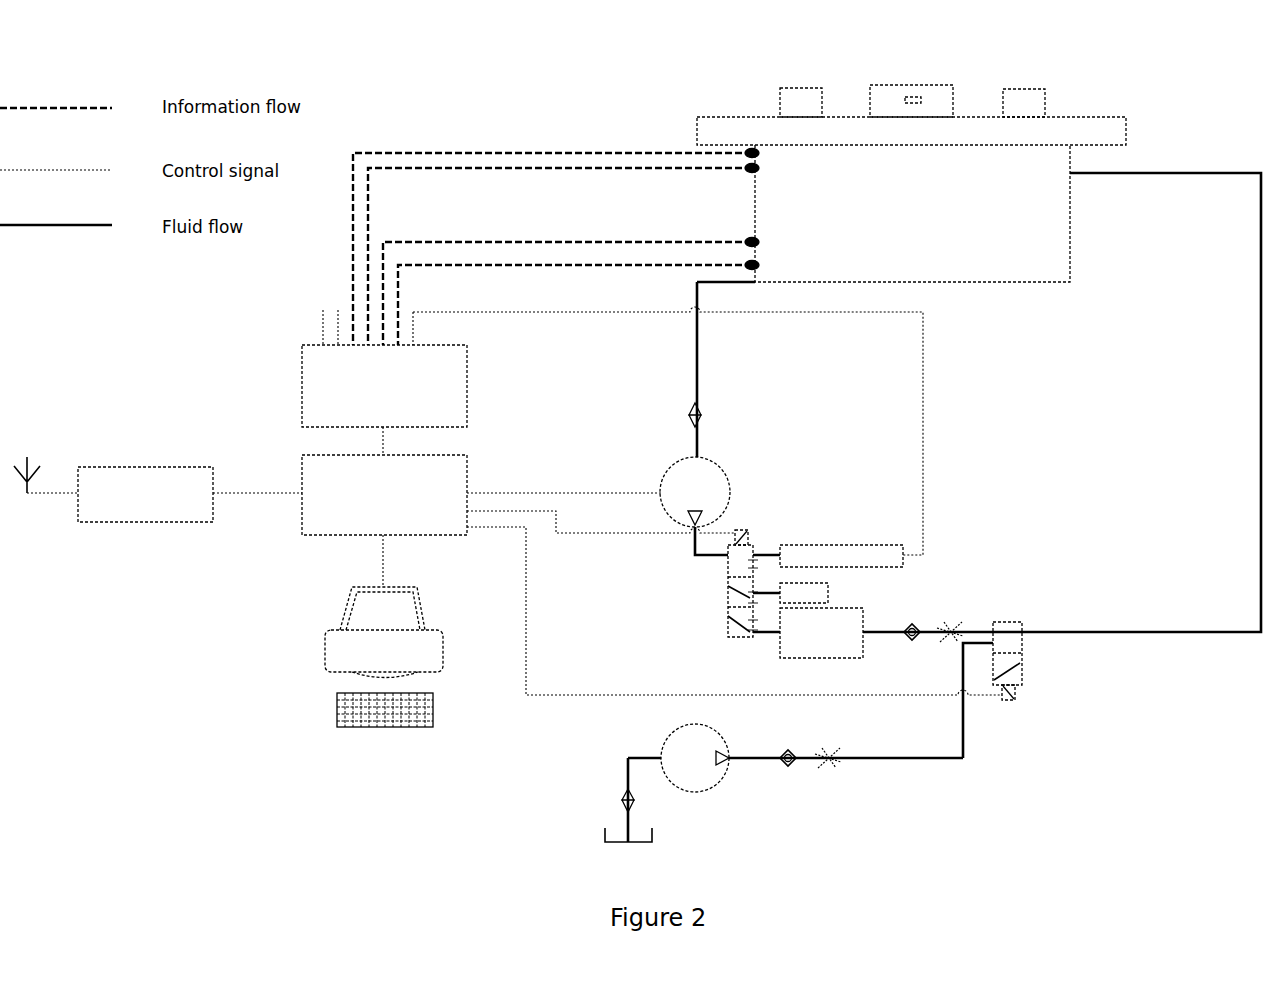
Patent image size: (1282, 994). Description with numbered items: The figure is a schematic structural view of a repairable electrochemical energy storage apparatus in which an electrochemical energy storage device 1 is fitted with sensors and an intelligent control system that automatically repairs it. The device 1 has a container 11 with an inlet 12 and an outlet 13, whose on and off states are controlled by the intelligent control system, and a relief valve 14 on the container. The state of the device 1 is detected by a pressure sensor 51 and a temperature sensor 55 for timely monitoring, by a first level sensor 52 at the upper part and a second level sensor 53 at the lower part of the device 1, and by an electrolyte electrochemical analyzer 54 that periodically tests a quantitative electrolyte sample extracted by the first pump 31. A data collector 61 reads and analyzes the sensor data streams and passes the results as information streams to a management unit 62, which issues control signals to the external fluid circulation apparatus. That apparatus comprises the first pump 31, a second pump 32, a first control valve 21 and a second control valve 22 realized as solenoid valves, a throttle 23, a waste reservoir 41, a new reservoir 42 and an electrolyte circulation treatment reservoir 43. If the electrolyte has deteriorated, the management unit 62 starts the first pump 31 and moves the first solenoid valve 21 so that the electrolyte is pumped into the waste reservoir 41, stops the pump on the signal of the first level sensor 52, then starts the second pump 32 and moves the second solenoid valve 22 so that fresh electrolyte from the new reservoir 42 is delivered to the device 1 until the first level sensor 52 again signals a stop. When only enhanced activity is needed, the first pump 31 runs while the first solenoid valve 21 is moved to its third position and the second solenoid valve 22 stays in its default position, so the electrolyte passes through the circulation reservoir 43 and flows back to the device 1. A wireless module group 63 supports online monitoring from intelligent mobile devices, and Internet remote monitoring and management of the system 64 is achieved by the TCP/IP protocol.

The electrochemical energy storage device 1 is at (1068, 86).
The container 11 is at (1128, 122).
The inlet 12 is at (1063, 162).
The outlet 13 is at (750, 281).
The relief valve 14 is at (880, 85).
The first control valve 21 is at (806, 705).
The second control valve 22 is at (1028, 672).
The throttle 23 is at (849, 768).
The first pump 31 is at (735, 497).
The second pump 32 is at (730, 774).
The waste reservoir 41 is at (778, 591).
The new reservoir 42 is at (653, 841).
The electrolyte circulation treatment reservoir 43 is at (821, 633).
The pressure sensor 51 is at (745, 153).
The first level sensor 52 is at (748, 172).
The second level sensor 53 is at (748, 264).
The electrolyte electrochemical analyzer 54 is at (841, 556).
The temperature sensor 55 is at (748, 242).
The data collector 61 is at (362, 360).
The management unit 62 is at (384, 495).
The wireless module group 63 is at (158, 489).
The system 64 is at (384, 631).